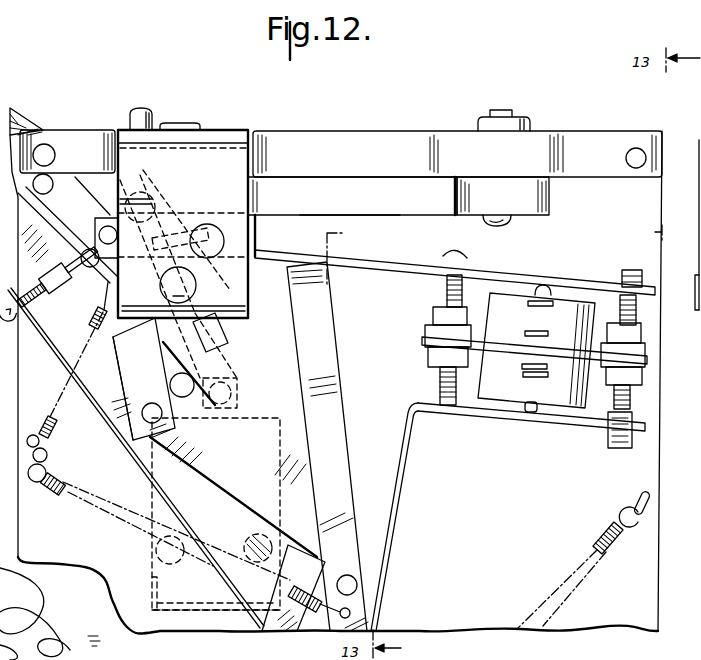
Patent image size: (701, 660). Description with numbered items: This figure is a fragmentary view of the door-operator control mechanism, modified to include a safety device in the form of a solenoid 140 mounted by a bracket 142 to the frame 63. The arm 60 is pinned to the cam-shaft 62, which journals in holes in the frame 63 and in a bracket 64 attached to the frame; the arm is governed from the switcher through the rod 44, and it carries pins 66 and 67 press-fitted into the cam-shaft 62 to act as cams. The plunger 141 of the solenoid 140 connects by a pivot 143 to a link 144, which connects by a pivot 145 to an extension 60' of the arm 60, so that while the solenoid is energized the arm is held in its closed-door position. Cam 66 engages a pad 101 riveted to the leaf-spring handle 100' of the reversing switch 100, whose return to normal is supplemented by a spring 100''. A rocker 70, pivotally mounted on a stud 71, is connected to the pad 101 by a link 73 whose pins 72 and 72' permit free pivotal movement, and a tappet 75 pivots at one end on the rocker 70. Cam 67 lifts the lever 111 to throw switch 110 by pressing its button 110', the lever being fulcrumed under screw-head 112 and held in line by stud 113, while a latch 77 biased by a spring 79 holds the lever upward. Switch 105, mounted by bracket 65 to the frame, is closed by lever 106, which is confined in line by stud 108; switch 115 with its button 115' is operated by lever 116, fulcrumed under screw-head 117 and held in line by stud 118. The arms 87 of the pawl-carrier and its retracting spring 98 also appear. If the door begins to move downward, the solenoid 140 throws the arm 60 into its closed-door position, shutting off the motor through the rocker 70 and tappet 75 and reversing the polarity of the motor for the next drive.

The frame 63 is at (575, 132).
The bracket 64 is at (220, 147).
The reversing switch 100 is at (503, 201).
The leaf-spring handle 100' is at (350, 202).
The spring 100'' is at (67, 364).
The bracket 65 is at (37, 125).
The rod 44 is at (143, 113).
The switch 105 is at (33, 233).
The pin 72 is at (88, 242).
The pin 72' is at (148, 401).
The stud 108 is at (37, 303).
The lever 106 is at (125, 452).
The spring 79 is at (43, 498).
The pin 67 is at (237, 283).
The cam-shaft 62 is at (178, 285).
The arm 60 is at (175, 244).
The extension 60' is at (226, 345).
The link 144 is at (213, 217).
The pivot 145 is at (180, 224).
The pin 66 is at (237, 337).
The plunger 141 is at (243, 301).
The solenoid 140 is at (287, 408).
The bracket 142 is at (181, 601).
The pivot 143 is at (211, 432).
The rocker 70 is at (211, 470).
The stud 71 is at (178, 376).
The link 73 is at (127, 366).
The pad 101 is at (259, 240).
The lever 111 is at (393, 263).
The screw-head 112 is at (458, 260).
The switch 110 is at (539, 333).
The button 110' is at (550, 273).
The stud 113 is at (635, 264).
The stud 118 is at (615, 447).
The switch 115 is at (534, 394).
The button 115' is at (521, 429).
The screw-head 117 is at (446, 417).
The lever 116 is at (401, 484).
The latch 77 is at (333, 331).
The tappet 75 is at (284, 628).
The arms of pawl-carrier 87 is at (650, 503).
The spring 98 is at (603, 528).